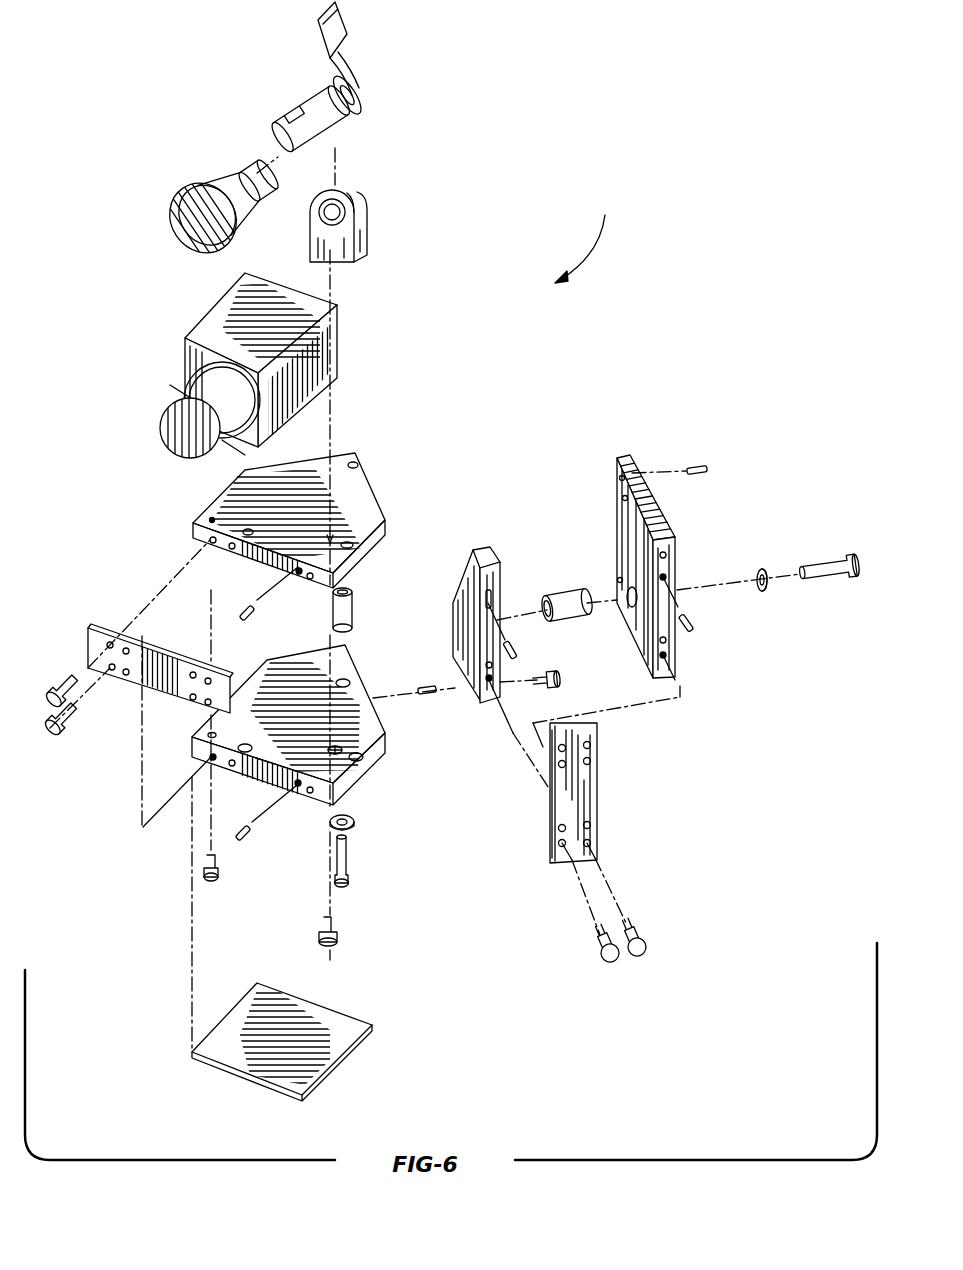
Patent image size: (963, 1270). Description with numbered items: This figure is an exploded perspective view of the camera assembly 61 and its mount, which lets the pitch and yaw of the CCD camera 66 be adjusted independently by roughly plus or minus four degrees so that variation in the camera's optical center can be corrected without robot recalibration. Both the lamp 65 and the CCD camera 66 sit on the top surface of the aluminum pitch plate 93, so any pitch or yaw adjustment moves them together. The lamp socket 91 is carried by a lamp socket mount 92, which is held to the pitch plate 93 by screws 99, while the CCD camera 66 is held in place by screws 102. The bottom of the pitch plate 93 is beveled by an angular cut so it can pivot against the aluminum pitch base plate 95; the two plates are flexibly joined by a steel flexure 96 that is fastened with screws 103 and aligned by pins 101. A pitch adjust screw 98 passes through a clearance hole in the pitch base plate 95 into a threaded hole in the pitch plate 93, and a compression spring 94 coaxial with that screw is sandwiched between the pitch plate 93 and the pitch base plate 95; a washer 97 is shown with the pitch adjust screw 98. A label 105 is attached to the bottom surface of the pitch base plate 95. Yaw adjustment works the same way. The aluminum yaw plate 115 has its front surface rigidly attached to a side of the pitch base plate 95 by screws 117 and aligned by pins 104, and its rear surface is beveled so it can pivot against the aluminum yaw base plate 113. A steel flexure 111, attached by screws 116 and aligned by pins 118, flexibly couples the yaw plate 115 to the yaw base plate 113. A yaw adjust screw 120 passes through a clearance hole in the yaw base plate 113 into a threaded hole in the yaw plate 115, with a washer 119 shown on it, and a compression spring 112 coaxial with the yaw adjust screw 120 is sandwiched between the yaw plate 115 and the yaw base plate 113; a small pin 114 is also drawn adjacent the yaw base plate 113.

The camera assembly 61 is at (588, 235).
The lamp 65 is at (237, 177).
The CCD camera 66 is at (210, 326).
The lamp socket 91 is at (302, 115).
The lamp socket mount 92 is at (367, 211).
The pitch plate 93 is at (365, 485).
The compression spring 94 is at (358, 608).
The pitch base plate 95 is at (381, 751).
The flexure 96 is at (88, 636).
The washer 97 is at (352, 826).
The pitch adjust screw 98 is at (348, 880).
The screws 99 is at (338, 937).
The pins 101 is at (246, 833).
The screws 102 is at (227, 875).
The screws 103 is at (62, 668).
The pins 104 is at (425, 685).
The label 105 is at (223, 1052).
The flexure 111 is at (597, 803).
The compression spring 112 is at (580, 595).
The yaw base plate 113 is at (670, 533).
The dowel pin 114 is at (718, 447).
The yaw plate 115 is at (489, 552).
The screws 116 is at (643, 940).
The screws 117 is at (574, 684).
The pins 118 is at (722, 628).
The washer 119 is at (764, 570).
The yaw adjust screw 120 is at (847, 560).